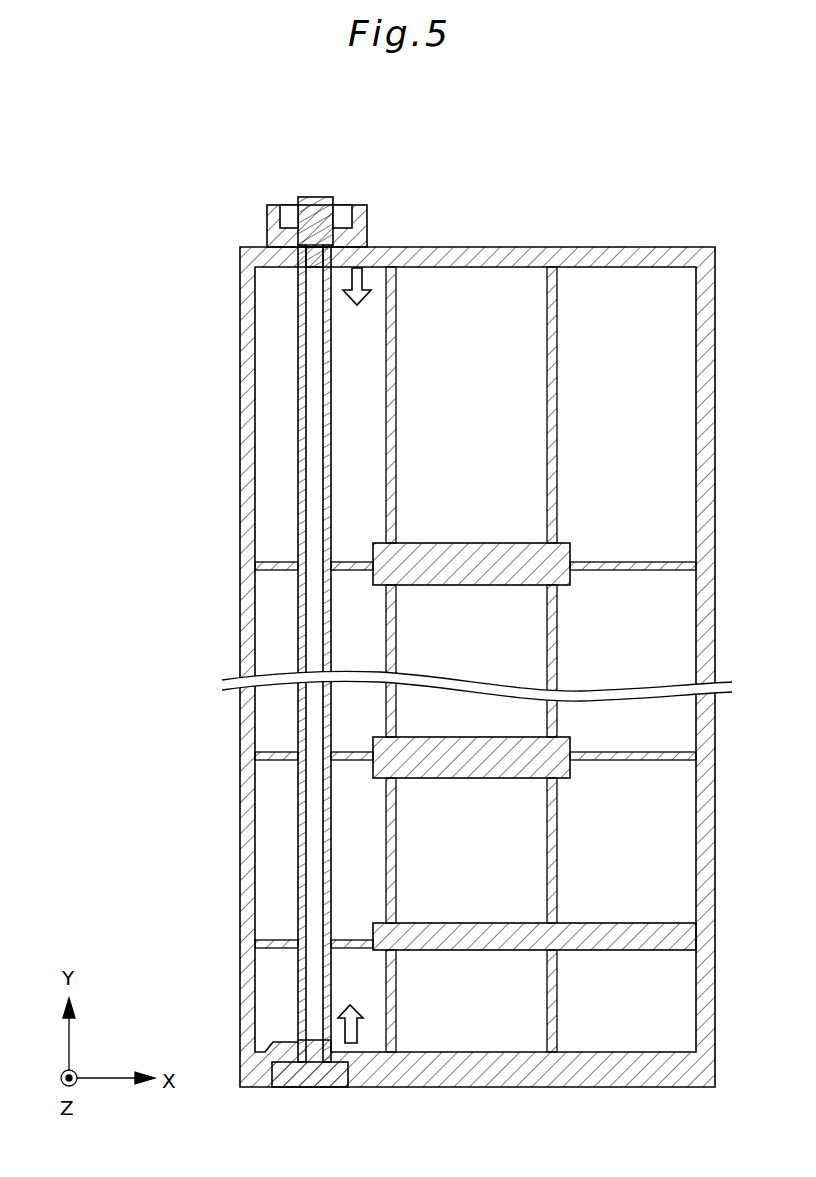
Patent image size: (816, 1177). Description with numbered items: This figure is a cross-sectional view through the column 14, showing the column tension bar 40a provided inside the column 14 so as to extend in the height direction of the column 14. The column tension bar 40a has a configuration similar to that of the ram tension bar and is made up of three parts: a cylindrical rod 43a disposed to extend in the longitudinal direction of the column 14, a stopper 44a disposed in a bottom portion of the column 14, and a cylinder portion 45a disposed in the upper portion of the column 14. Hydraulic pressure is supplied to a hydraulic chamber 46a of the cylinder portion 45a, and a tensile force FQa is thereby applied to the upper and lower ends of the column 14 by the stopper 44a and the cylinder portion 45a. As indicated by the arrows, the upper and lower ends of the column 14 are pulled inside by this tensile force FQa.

The column 14 is at (636, 257).
The column tension bar 40a is at (306, 180).
The cylindrical rod 43a is at (298, 513).
The stopper 44a is at (300, 1088).
The cylinder portion 45a is at (250, 214).
The hydraulic chamber 46a is at (342, 208).
The tensile force FQa is at (365, 278).